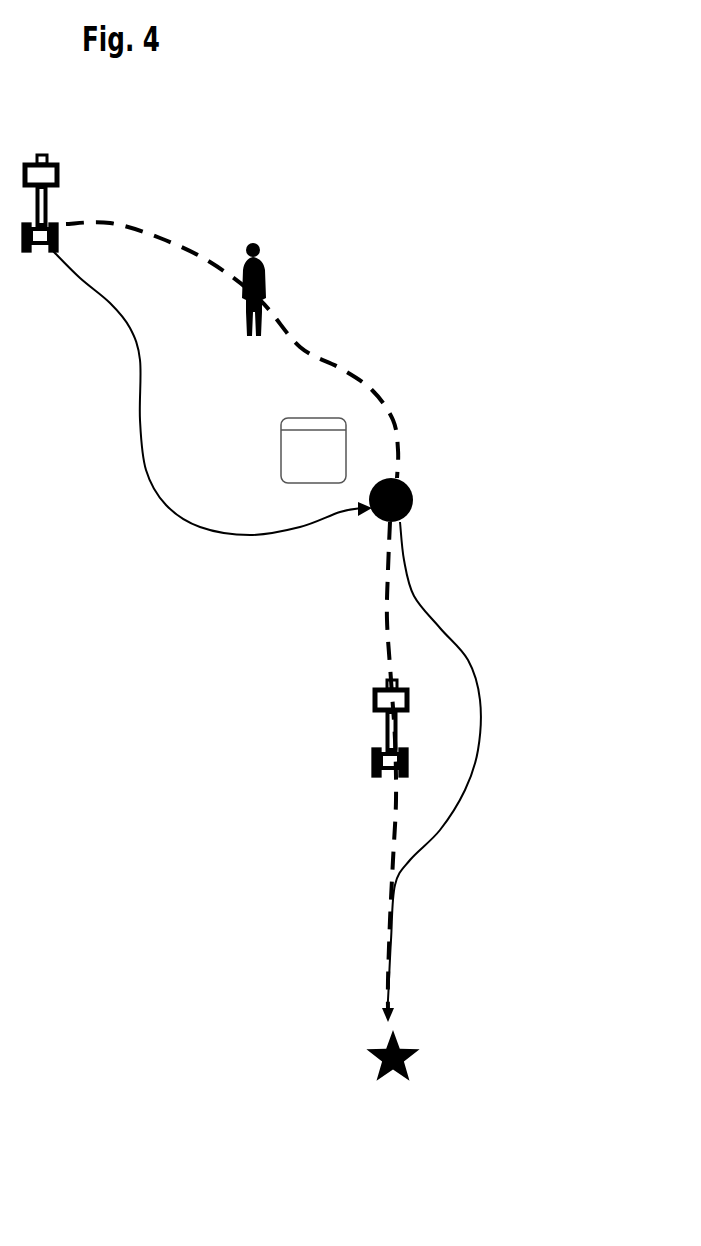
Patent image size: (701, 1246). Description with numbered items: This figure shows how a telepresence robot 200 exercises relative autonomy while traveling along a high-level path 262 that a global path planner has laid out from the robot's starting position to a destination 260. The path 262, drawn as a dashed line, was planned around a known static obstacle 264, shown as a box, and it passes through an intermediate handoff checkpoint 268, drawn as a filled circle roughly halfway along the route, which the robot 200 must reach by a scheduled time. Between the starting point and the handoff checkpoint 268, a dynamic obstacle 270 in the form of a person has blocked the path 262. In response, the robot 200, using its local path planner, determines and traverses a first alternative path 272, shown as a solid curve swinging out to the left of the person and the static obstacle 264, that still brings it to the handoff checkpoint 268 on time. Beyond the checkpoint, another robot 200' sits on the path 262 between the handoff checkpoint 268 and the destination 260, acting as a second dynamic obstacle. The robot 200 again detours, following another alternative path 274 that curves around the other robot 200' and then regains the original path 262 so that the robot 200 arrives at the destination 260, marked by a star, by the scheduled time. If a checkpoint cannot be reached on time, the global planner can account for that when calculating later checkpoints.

The robot 200 is at (70, 203).
The another robot 200' is at (421, 728).
The destination 260 is at (410, 1070).
The high-level path 262 is at (333, 364).
The static obstacle 264 is at (281, 449).
The handoff checkpoint 268 is at (413, 500).
The dynamic obstacle 270 is at (266, 290).
The first alternative path 272 is at (140, 395).
The alternative path 274 is at (467, 661).